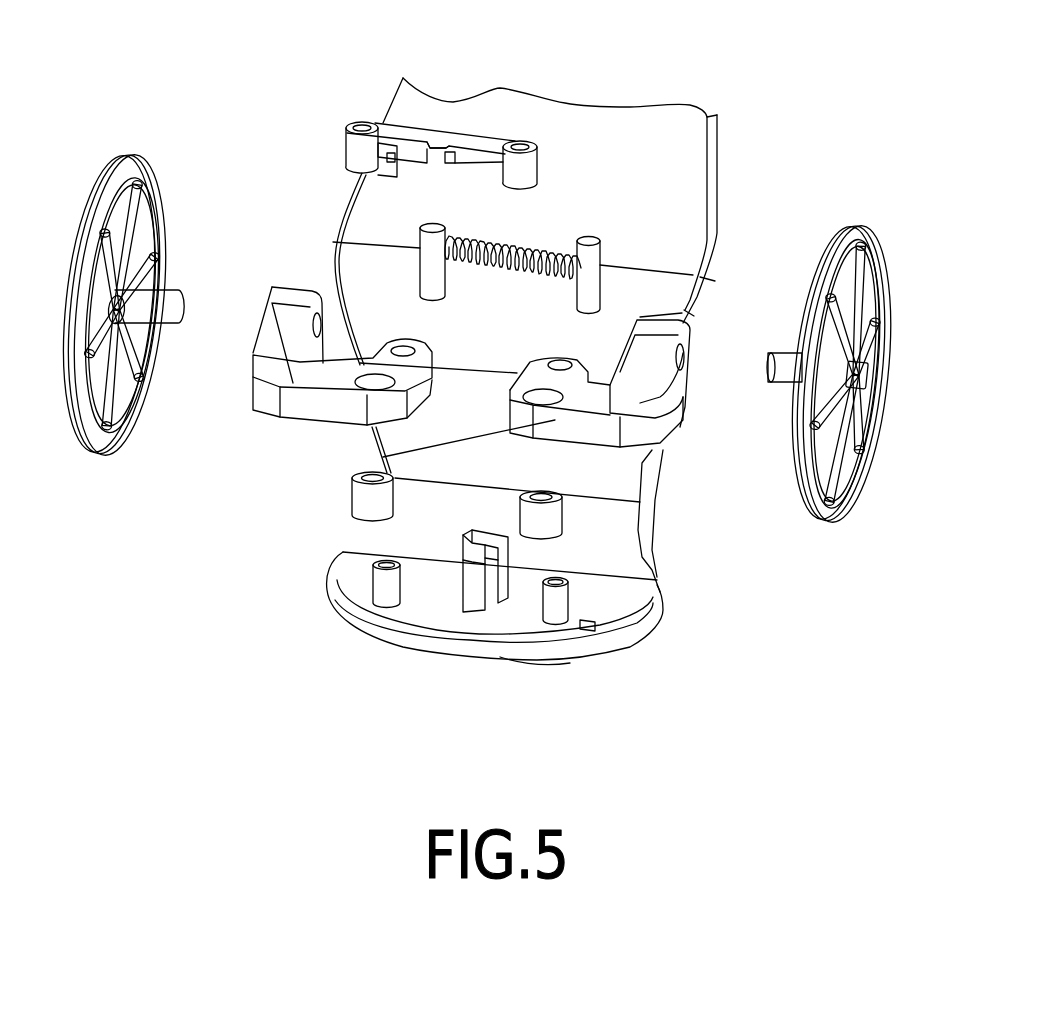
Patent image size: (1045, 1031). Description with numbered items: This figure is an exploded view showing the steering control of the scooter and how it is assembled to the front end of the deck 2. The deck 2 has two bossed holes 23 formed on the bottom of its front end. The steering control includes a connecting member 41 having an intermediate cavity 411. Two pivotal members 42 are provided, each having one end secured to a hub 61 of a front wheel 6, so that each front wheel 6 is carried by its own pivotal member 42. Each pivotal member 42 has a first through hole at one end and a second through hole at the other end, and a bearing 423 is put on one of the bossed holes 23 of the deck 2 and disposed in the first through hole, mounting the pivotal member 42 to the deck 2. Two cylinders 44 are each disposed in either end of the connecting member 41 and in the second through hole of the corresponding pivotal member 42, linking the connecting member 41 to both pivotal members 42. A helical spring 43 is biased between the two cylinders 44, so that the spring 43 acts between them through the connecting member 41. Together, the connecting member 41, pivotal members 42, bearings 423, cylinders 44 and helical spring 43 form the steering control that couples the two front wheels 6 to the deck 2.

The deck 2 is at (688, 143).
The connecting member 41 is at (495, 143).
The intermediate cavity 411 is at (445, 143).
The cylinders 44 is at (588, 242).
The helical spring 43 is at (543, 278).
The pivotal members 42 is at (548, 420).
The bearing 423 is at (362, 500).
The bossed holes 23 is at (557, 600).
The front wheel 6 is at (148, 203).
The hub 61 is at (150, 303).